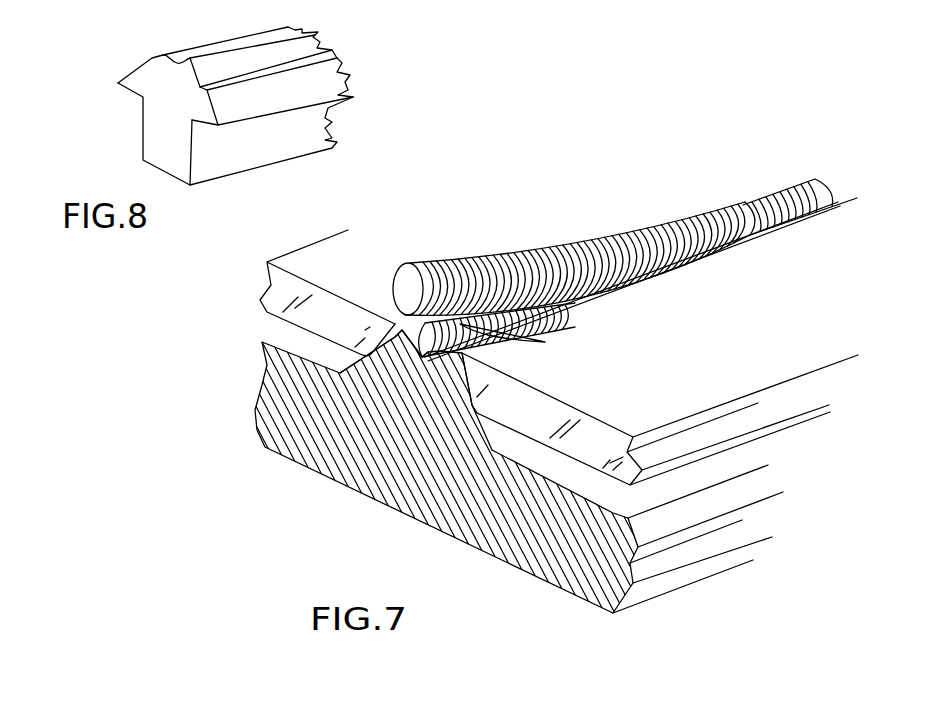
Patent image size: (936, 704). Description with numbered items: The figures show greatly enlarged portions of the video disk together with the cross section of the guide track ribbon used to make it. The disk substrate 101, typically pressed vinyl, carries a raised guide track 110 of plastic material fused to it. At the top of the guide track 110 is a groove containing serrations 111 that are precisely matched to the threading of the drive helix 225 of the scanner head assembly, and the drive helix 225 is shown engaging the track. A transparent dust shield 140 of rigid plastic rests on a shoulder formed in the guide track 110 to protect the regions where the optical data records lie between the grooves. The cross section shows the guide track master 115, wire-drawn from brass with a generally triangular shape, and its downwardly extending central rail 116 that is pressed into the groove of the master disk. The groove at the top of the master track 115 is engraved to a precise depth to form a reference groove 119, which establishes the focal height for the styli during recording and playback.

In FIG. 8, the guide track master 115 is at (146, 60).
In FIG. 8, the central rail 116 is at (165, 128).
In FIG. 7, the disk substrate 101 is at (600, 587).
In FIG. 7, the reference groove 119 is at (317, 392).
In FIG. 7, the transparent dust shield 140 is at (790, 357).
In FIG. 7, the drive helix 225 is at (541, 240).
In FIG. 7, the guide track 110 is at (778, 197).
In FIG. 7, the serrations 111 is at (545, 342).